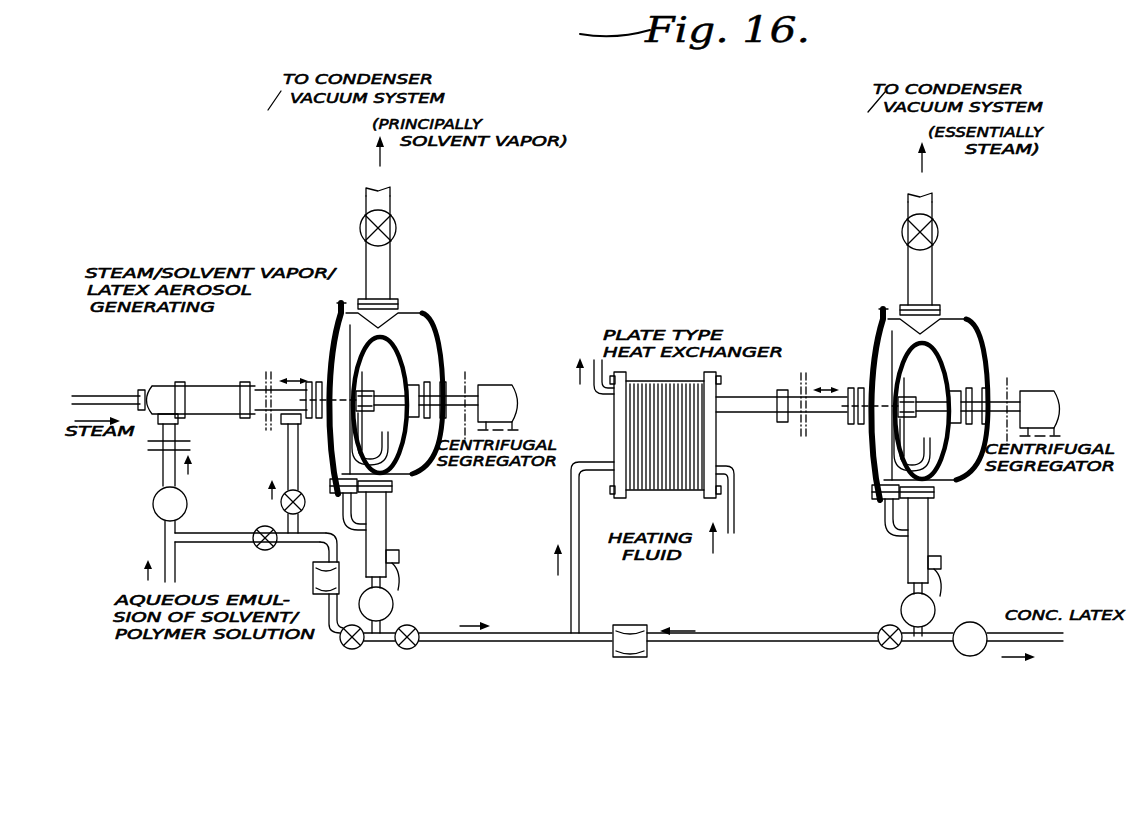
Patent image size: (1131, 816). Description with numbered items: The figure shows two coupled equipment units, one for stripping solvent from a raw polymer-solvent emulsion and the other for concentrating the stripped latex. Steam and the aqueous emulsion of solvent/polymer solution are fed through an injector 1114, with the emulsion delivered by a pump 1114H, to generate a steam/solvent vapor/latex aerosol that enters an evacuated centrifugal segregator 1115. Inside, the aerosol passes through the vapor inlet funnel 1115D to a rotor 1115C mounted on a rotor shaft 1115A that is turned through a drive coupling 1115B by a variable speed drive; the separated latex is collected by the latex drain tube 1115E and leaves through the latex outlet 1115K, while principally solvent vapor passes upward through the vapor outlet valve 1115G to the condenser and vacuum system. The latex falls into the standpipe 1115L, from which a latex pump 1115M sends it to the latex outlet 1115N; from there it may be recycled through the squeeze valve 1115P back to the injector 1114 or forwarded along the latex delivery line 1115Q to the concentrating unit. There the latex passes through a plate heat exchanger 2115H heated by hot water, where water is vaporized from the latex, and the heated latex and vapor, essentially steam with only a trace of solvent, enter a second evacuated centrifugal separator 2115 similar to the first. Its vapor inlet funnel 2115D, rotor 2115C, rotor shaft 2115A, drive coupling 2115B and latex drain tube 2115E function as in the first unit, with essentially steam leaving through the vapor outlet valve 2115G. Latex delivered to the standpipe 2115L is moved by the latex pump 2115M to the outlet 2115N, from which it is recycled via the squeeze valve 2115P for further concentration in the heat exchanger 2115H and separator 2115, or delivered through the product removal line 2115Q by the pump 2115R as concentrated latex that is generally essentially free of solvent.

The steam/solvent vapor/latex aerosol generating injector 1114 is at (200, 385).
The pump 1114H is at (153, 505).
The centrifugal segregator 1115 is at (337, 330).
The rotor shaft 1115A is at (400, 363).
The drive coupling 1115B is at (430, 388).
The rotor 1115C is at (400, 338).
The vapor inlet funnel 1115D is at (397, 320).
The latex drain tube 1115E is at (398, 458).
The vapor outlet valve 1115G is at (392, 195).
The latex outlet 1115K is at (395, 482).
The standpipe 1115L is at (380, 524).
The latex pump 1115M is at (394, 602).
The latex outlet 1115N is at (222, 543).
The squeeze valve 1115P is at (312, 580).
The latex delivery line 1115Q is at (538, 650).
The centrifugal separator 2115 is at (891, 404).
The rotor shaft 2115A is at (947, 375).
The drive coupling 2115B is at (1012, 398).
The rotor 2115C is at (964, 391).
The vapor inlet funnel 2115D is at (952, 305).
The latex drain tube 2115E is at (963, 477).
The vapor outlet valve 2115G is at (962, 223).
The plate heat exchanger 2115H is at (686, 382).
The standpipe 2115L is at (959, 547).
The latex pump 2115M is at (967, 608).
The outlet 2115N is at (913, 649).
The squeeze valve 2115P is at (632, 660).
The product removal line 2115Q is at (1058, 660).
The pump 2115R is at (966, 657).